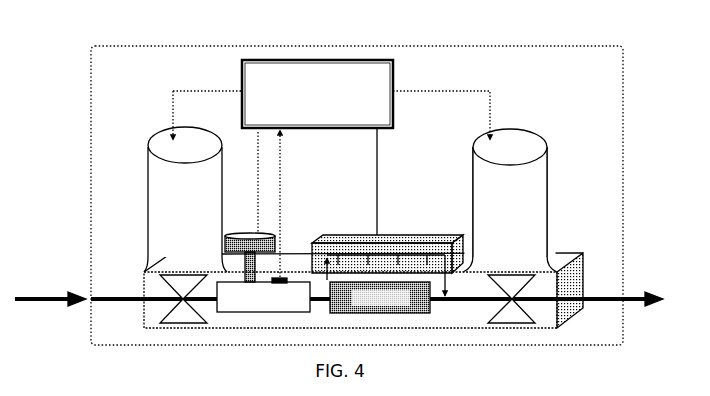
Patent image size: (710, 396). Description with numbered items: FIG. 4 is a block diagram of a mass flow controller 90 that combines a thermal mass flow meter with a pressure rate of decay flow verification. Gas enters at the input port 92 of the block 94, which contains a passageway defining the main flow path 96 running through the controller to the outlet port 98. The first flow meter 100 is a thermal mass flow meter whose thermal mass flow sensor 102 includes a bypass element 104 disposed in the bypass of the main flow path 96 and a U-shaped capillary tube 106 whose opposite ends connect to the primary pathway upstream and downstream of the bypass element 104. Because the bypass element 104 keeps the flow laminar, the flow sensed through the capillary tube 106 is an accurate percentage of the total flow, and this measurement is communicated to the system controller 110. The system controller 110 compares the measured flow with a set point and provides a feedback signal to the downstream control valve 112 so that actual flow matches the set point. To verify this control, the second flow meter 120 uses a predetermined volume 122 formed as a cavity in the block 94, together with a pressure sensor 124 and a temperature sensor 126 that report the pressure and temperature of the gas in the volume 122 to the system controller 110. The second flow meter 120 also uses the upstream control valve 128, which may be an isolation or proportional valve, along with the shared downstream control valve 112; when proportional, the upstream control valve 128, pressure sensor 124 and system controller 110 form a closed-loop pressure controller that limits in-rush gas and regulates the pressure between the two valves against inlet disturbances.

The mass flow controller 90 is at (625, 62).
The input port 92 is at (50, 288).
The block 94 is at (173, 331).
The main flow path 96 is at (153, 297).
The outlet port 98 is at (639, 290).
The first flow meter 100 is at (404, 174).
The thermal mass flow sensor 102 is at (400, 232).
The bypass element 104 is at (405, 318).
The U-shaped capillary tube 106 is at (452, 285).
The system controller 110 is at (331, 168).
The downstream control valve 112 is at (517, 143).
The second flow meter 120 is at (223, 125).
The predetermined volume 122 is at (297, 305).
The pressure sensor 124 is at (246, 229).
The temperature sensor 126 is at (288, 273).
The upstream control valve 128 is at (166, 151).